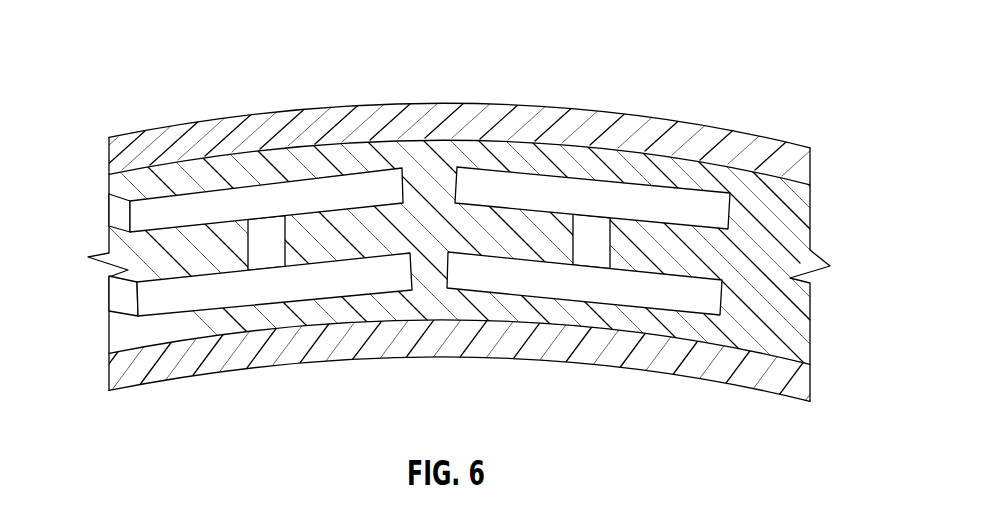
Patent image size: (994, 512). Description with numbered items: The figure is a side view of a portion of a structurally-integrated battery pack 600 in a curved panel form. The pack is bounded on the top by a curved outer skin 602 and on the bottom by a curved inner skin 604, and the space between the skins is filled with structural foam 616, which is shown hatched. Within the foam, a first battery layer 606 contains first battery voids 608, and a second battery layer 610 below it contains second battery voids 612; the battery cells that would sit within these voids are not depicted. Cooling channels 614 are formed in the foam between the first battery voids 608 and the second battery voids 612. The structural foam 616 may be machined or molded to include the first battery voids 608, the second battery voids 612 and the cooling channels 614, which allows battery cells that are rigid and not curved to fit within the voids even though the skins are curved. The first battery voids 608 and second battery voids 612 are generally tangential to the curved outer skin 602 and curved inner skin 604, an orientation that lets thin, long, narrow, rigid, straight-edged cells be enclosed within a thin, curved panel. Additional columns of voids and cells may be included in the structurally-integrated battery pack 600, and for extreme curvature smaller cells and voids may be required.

The structurally-integrated battery pack 600 is at (497, 229).
The curved outer skin 602 is at (480, 123).
The curved inner skin 604 is at (537, 340).
The first battery layer 606 is at (385, 149).
The first battery voids 608 is at (250, 193).
The second battery layer 610 is at (380, 338).
The second battery voids 612 is at (228, 293).
The cooling channels 614 is at (285, 250).
The structural foam 616 is at (792, 338).